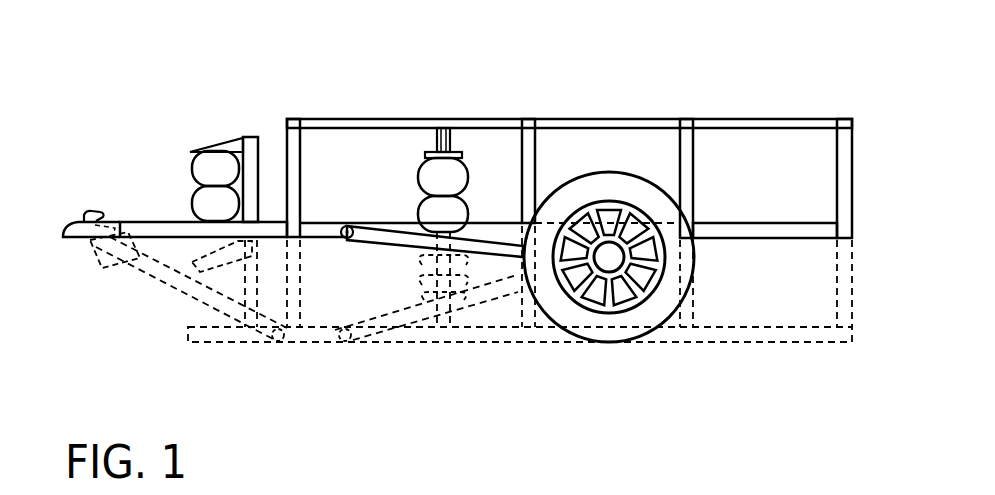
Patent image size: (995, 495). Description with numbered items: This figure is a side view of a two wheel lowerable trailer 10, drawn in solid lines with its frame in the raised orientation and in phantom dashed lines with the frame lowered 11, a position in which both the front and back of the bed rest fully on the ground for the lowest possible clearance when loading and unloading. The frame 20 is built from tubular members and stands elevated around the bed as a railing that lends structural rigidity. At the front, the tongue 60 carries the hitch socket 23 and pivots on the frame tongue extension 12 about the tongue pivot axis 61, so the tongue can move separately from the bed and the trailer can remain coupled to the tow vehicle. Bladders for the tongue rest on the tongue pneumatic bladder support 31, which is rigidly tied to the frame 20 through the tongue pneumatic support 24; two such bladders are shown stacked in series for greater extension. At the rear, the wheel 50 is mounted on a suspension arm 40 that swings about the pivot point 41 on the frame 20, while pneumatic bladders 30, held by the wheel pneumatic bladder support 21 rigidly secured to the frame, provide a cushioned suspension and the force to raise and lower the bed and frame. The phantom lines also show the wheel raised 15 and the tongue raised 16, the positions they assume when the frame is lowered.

The trailer 10 is at (152, 55).
The frame lowered 11 is at (826, 341).
The frame tongue extension 12 is at (226, 343).
The wheel raised 15 is at (486, 306).
The tongue raised 16 is at (168, 284).
The frame 20 is at (768, 118).
The wheel pneumatic bladder support 21 is at (457, 156).
The hitch socket 23 is at (78, 221).
The tongue pneumatic support 24 is at (232, 146).
The pneumatic bladders 30 is at (422, 165).
The tongue pneumatic bladder support 31 is at (194, 163).
The suspension arm 40 is at (397, 244).
The pivot point 41 is at (347, 226).
The wheel 50 is at (650, 340).
The tongue 60 is at (155, 221).
The tongue pivot axis 61 is at (283, 342).